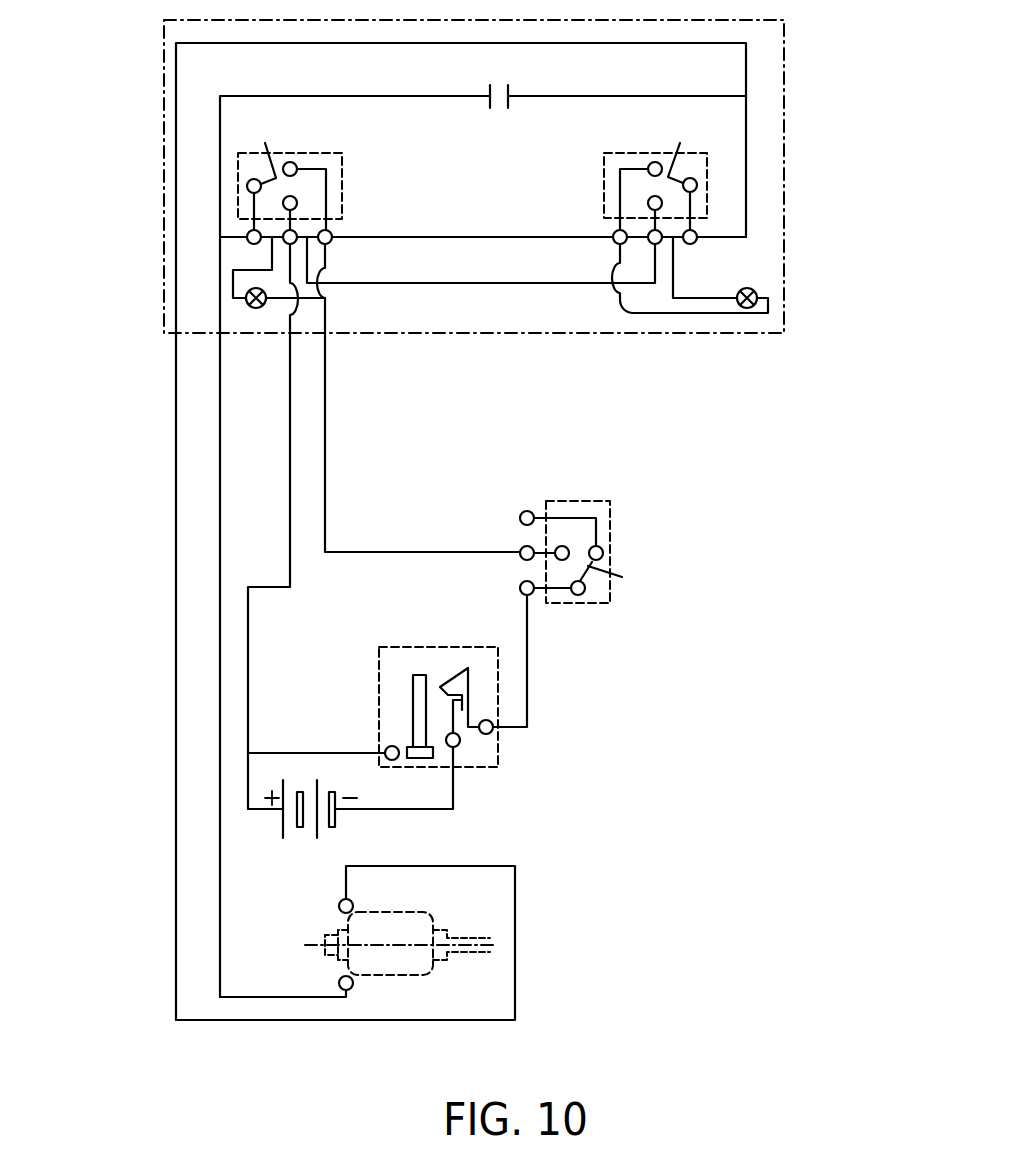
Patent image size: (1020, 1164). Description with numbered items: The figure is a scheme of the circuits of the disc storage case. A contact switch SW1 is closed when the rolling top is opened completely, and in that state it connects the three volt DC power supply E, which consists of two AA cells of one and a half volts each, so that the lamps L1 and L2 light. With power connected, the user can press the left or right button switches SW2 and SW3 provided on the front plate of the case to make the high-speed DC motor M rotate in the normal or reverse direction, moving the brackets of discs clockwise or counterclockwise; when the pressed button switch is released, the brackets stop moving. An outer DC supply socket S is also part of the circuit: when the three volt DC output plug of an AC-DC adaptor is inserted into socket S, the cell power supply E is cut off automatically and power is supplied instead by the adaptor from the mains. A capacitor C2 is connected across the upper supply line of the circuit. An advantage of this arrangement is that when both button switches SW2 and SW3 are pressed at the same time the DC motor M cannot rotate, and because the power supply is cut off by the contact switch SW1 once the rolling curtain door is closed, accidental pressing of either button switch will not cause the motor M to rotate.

The contact switch SW1 is at (610, 501).
The button switch SW2 is at (238, 153).
The button switch SW3 is at (707, 153).
The lamp L1 is at (249, 306).
The lamp L2 is at (754, 290).
The capacitor C2 is at (499, 79).
The outer DC supply socket S is at (379, 647).
The DC power supply E is at (350, 792).
The DC motor M is at (342, 923).